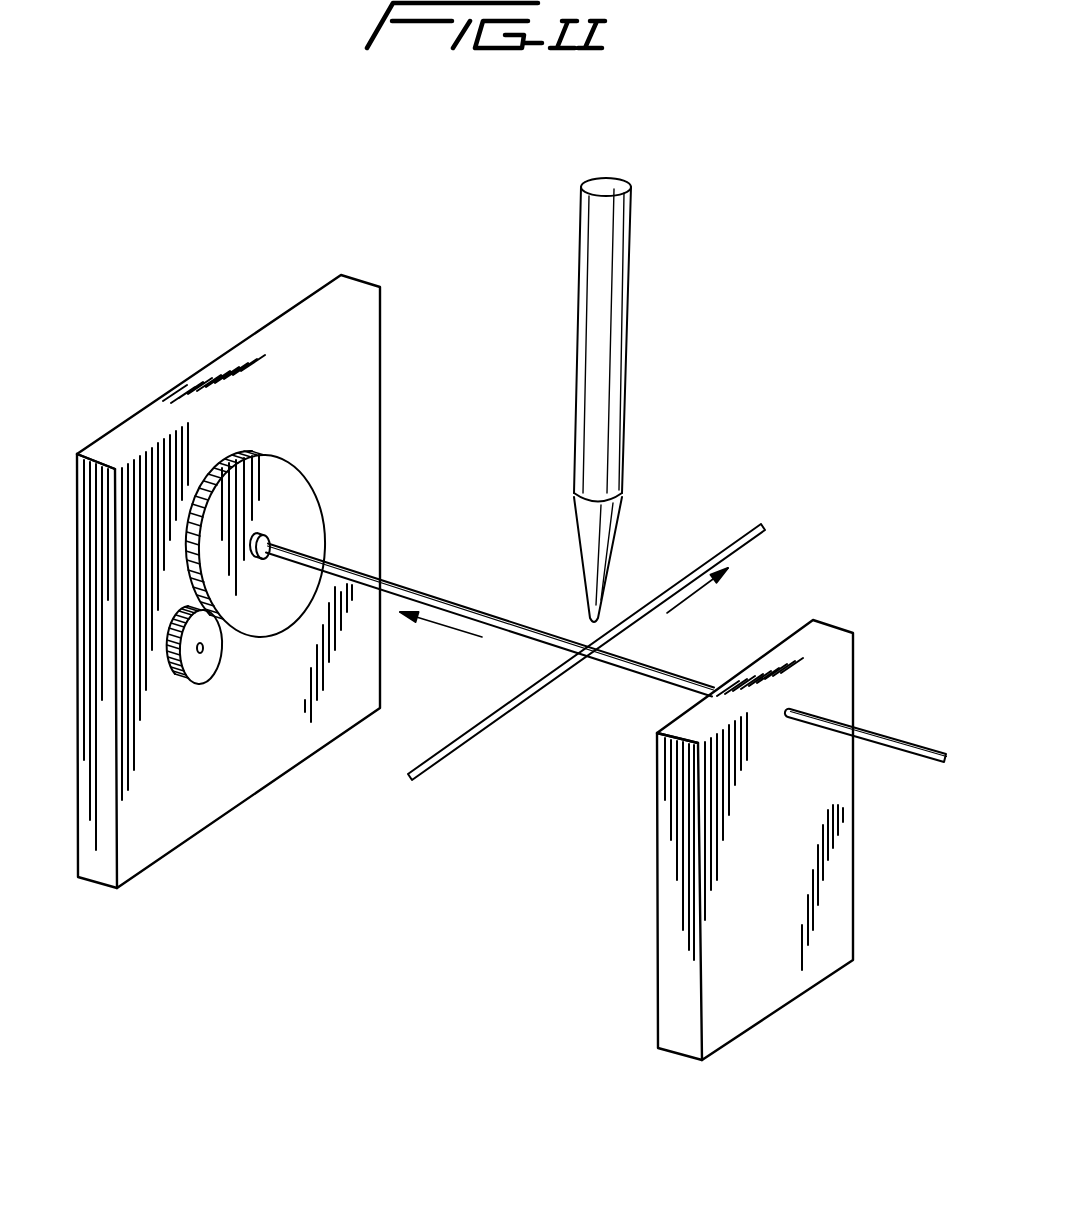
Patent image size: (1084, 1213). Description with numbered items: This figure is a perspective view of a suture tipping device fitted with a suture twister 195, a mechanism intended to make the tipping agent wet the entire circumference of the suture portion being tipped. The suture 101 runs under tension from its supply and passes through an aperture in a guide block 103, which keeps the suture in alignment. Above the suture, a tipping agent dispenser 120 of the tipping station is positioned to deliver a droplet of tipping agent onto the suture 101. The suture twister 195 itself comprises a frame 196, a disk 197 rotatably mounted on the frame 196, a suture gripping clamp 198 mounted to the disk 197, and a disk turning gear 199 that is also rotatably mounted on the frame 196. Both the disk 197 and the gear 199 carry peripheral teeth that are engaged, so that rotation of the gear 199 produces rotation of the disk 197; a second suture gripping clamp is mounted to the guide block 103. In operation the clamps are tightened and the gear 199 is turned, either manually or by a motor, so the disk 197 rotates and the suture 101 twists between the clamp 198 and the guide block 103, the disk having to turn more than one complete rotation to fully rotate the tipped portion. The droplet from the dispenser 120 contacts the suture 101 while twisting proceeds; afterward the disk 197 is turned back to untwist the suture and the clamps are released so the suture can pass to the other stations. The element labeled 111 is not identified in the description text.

The suture twister 195 is at (218, 322).
The frame 196 is at (350, 284).
The disk 197 is at (305, 495).
The suture gripping clamp 198 is at (268, 560).
The disk turning gear 199 is at (202, 672).
The suture 101 is at (487, 615).
The second shaft 111 is at (512, 707).
The tipping agent dispenser 120 is at (620, 312).
The guide block 103 is at (828, 636).